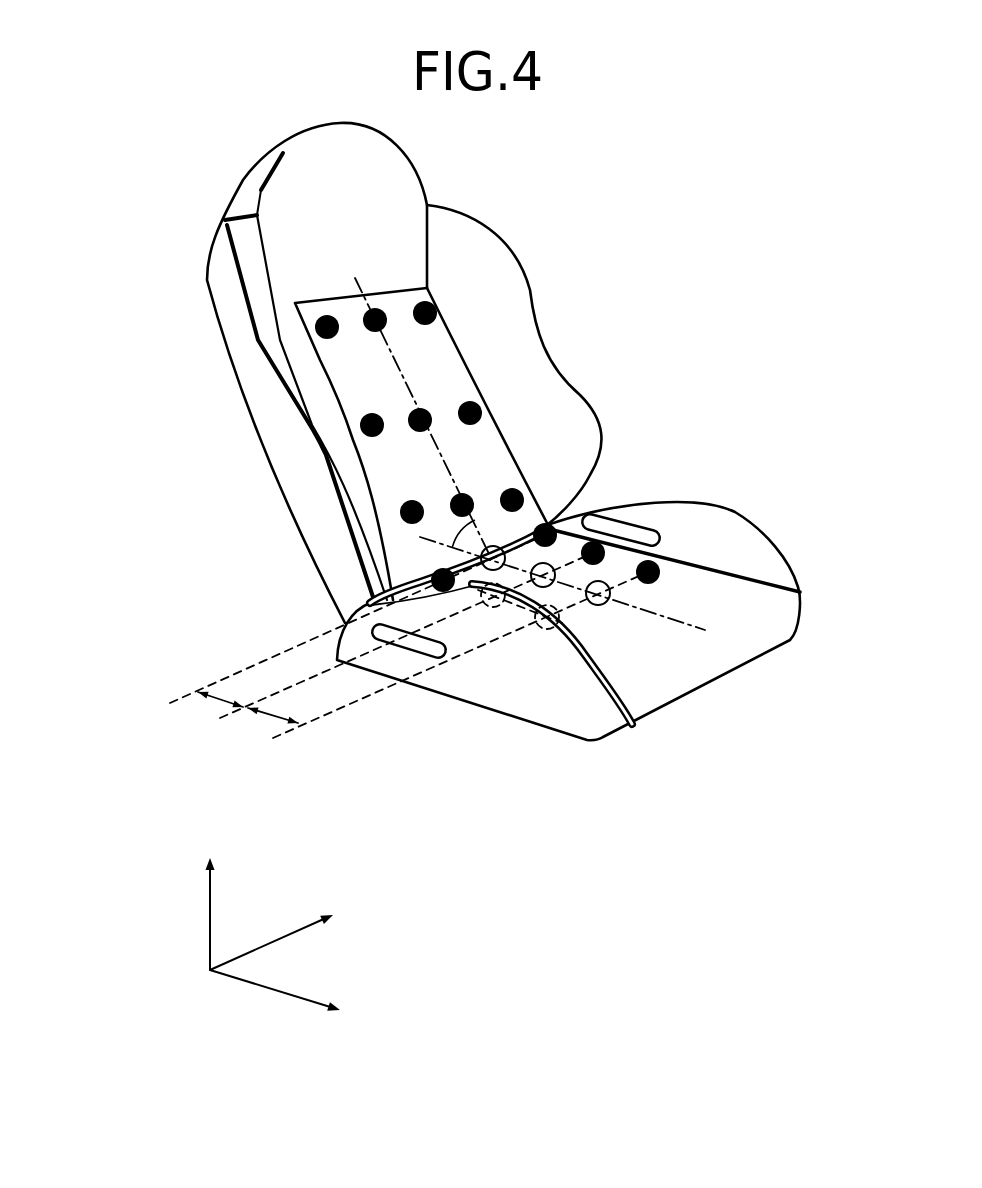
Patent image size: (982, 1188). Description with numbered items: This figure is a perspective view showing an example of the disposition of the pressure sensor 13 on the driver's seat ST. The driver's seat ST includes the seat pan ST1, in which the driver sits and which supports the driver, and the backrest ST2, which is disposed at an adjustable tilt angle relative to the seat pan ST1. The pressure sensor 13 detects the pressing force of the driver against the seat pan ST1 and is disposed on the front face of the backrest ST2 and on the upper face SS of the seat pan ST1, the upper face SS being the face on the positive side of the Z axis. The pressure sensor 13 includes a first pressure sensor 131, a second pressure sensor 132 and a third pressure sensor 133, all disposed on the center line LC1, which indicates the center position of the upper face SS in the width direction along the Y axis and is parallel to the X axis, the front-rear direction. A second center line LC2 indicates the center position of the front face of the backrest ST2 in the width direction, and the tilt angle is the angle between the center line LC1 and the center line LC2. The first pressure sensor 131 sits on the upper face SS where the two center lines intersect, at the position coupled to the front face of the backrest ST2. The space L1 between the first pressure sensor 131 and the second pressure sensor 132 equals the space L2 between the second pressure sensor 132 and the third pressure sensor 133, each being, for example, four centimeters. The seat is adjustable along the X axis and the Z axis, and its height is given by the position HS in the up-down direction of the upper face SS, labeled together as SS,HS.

The driver's seat ST is at (137, 397).
The seat pan ST1 is at (437, 686).
The backrest ST2 is at (280, 468).
The pressure sensor 13 is at (665, 477).
The first pressure sensor 131 is at (500, 543).
The second pressure sensor 132 is at (547, 565).
The third pressure sensor 133 is at (613, 593).
The center line LC1 is at (705, 630).
The center line LC2 is at (436, 450).
The upper face SS is at (742, 593).
The position in the up-down direction HS is at (568, 621).
The upper face and up-down position SS,HS is at (604, 621).
The space L1 is at (210, 710).
The space L2 is at (263, 731).
The X axis X is at (285, 998).
The Y axis Y is at (281, 934).
The Z axis Z is at (210, 898).